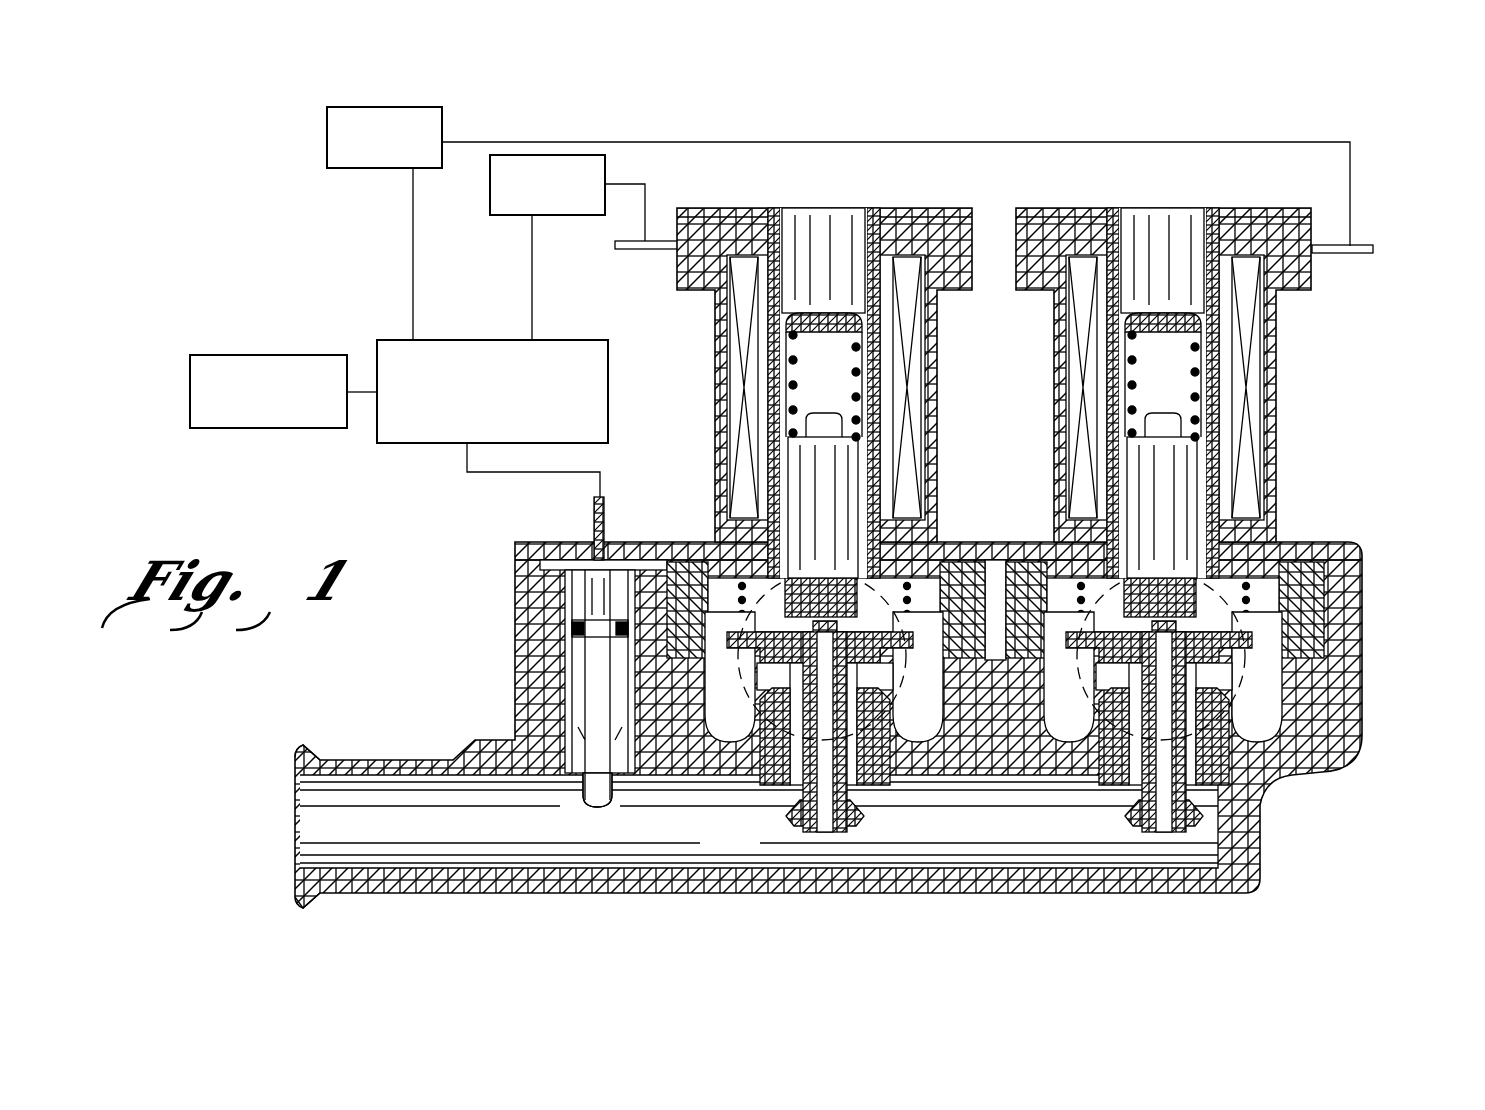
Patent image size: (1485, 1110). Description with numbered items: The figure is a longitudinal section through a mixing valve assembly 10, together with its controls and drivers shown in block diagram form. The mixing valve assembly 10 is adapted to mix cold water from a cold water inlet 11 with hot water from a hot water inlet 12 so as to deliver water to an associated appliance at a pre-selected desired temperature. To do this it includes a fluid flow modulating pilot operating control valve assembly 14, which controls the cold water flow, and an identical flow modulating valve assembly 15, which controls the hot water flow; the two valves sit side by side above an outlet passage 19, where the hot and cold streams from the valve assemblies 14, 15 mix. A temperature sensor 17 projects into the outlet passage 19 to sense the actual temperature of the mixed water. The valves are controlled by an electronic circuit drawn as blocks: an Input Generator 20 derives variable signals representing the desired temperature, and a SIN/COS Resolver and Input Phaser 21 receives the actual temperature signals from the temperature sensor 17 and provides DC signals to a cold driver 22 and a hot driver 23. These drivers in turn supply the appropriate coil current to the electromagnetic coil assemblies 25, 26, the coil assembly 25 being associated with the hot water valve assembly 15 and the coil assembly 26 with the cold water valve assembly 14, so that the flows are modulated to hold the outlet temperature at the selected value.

The mixing valve assembly 10 is at (1300, 428).
The cold water inlet 11 is at (900, 708).
The hot water inlet 12 is at (1245, 695).
The pilot operating control valve assembly 14 is at (708, 438).
The flow modulating valve assembly 15 is at (1046, 464).
The temperature sensor 17 is at (558, 677).
The outlet passage 19 is at (345, 775).
The Input Generator 20 is at (220, 350).
The SIN/COS Resolver and Input Phaser 21 is at (391, 335).
The cold driver 22 is at (322, 135).
The hot driver 23 is at (537, 155).
The electromagnetic coil assembly 25 is at (1280, 353).
The electromagnetic coil assembly 26 is at (937, 362).